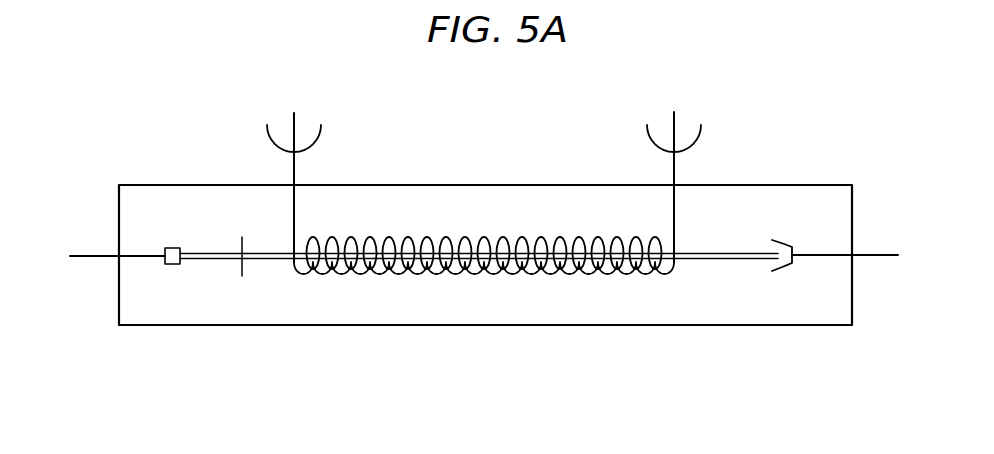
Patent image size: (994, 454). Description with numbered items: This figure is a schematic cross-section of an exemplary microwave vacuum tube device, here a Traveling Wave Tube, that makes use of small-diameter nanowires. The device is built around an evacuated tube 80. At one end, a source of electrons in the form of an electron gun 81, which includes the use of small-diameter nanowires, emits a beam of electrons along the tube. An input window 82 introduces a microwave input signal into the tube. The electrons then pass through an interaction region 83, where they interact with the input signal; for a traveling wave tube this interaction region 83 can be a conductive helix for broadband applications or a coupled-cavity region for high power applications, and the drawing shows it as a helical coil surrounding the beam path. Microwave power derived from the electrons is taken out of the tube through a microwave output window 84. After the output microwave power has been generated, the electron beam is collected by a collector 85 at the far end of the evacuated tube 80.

The evacuated tube 80 is at (487, 185).
The electron gun 81 is at (180, 264).
The input window 82 is at (303, 135).
The interaction region 83 is at (675, 373).
The microwave output window 84 is at (682, 138).
The collector 85 is at (790, 263).